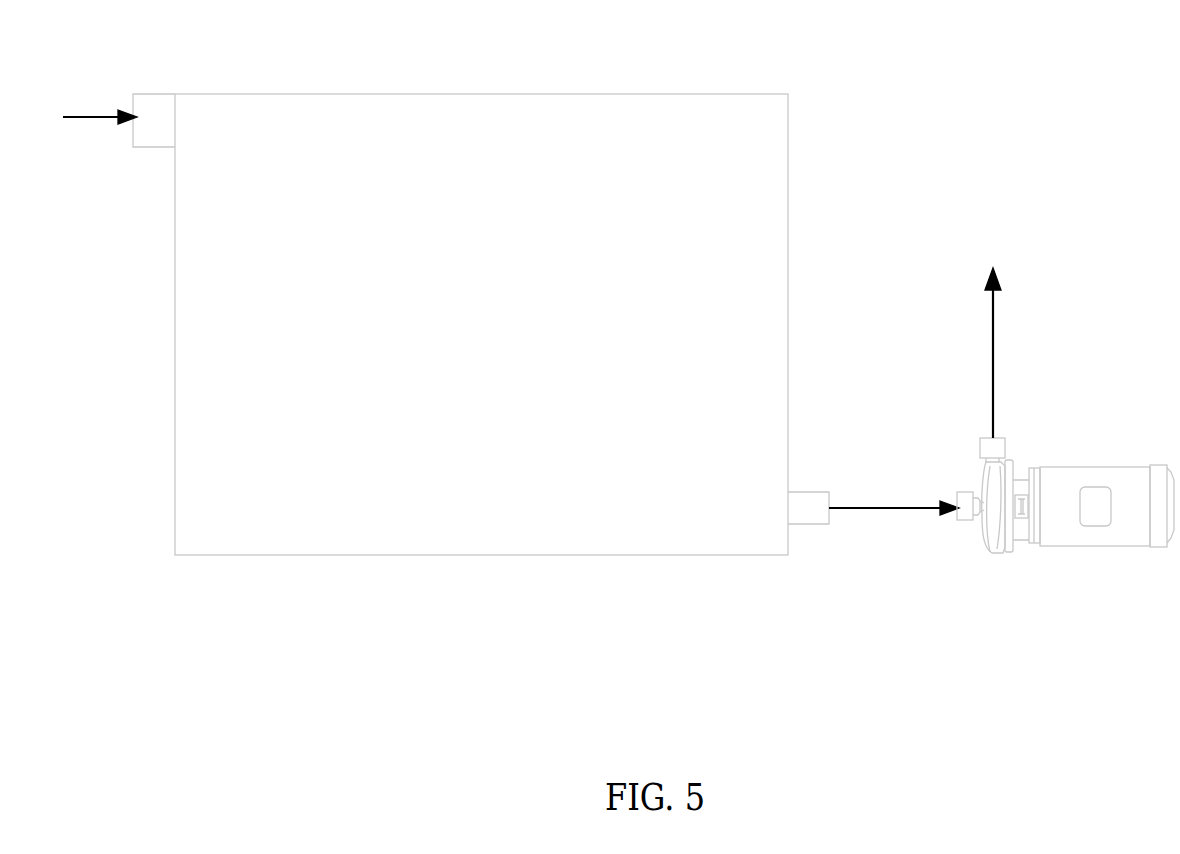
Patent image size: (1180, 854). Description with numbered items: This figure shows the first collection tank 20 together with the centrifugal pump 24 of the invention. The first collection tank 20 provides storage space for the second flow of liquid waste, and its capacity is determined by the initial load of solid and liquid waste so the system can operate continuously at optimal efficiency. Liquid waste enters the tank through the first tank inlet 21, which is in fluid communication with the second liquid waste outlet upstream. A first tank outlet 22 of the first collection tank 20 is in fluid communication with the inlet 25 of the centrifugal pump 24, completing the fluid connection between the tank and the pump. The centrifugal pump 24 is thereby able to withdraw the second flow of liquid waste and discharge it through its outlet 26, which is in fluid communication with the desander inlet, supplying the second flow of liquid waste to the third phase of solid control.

The first collection tank 20 is at (181, 473).
The first tank inlet 21 is at (150, 102).
The first tank outlet 22 is at (812, 497).
The centrifugal pump 24 is at (1132, 473).
The inlet 25 is at (965, 520).
The outlet 26 is at (1005, 444).